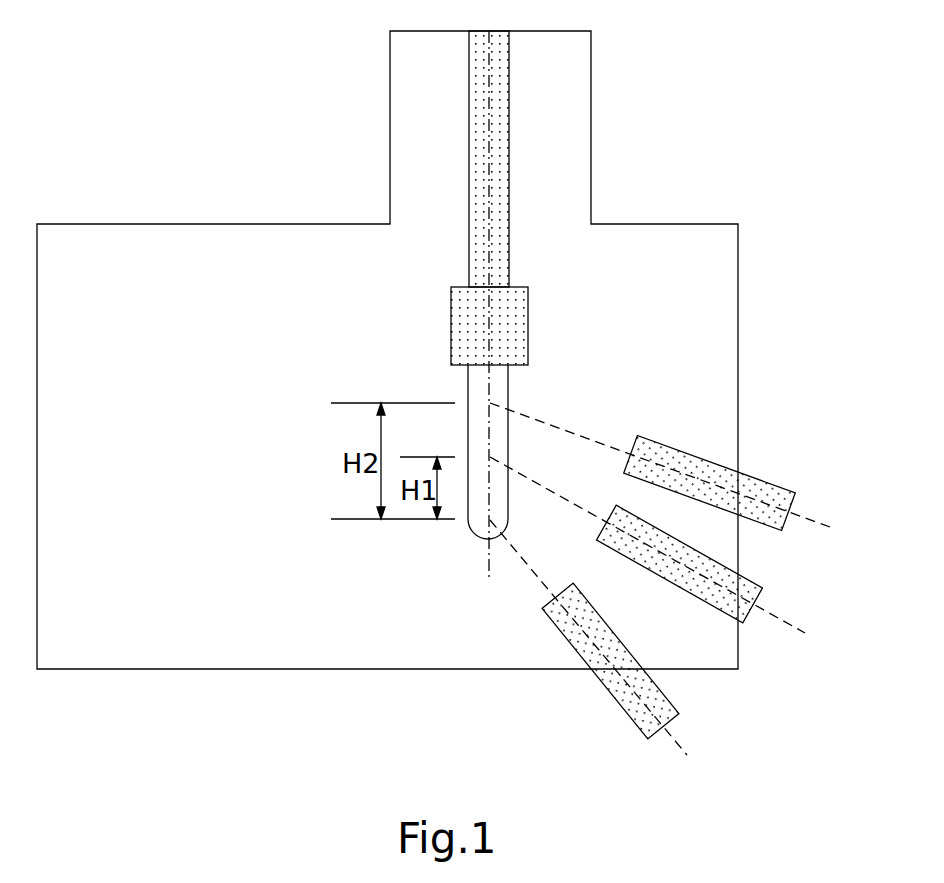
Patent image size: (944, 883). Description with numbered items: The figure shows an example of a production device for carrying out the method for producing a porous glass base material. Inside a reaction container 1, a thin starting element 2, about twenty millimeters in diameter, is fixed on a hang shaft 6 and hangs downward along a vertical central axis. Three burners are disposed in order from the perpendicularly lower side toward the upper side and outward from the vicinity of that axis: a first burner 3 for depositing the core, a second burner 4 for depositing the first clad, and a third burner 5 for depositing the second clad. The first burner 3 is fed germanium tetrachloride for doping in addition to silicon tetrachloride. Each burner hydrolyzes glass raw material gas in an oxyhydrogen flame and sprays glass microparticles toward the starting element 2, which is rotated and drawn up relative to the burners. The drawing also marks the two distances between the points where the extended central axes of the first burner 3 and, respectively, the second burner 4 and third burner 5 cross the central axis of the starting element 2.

The reaction container 1 is at (738, 282).
The starting element 2 is at (508, 390).
The first burner 3 is at (678, 706).
The second burner 4 is at (763, 585).
The third burner 5 is at (782, 487).
The hang shaft 6 is at (509, 268).